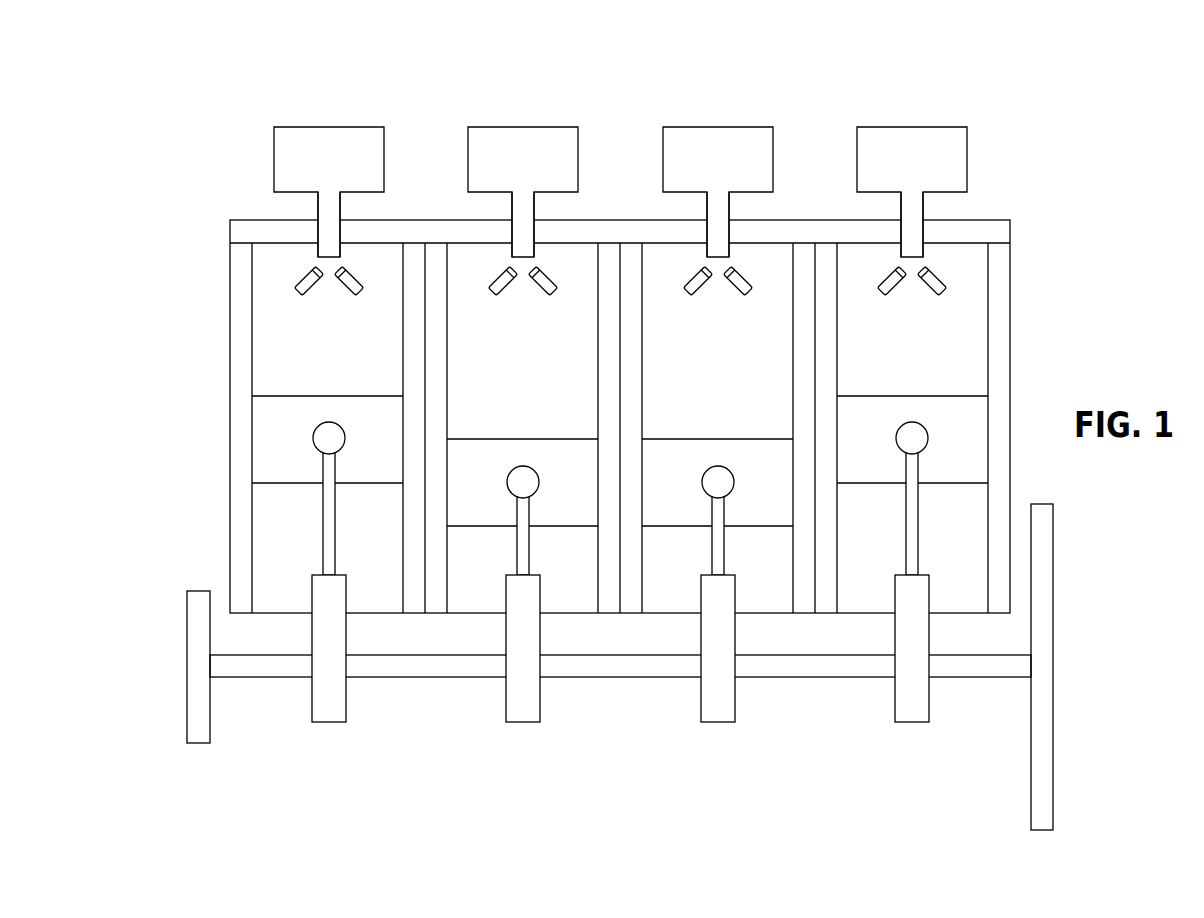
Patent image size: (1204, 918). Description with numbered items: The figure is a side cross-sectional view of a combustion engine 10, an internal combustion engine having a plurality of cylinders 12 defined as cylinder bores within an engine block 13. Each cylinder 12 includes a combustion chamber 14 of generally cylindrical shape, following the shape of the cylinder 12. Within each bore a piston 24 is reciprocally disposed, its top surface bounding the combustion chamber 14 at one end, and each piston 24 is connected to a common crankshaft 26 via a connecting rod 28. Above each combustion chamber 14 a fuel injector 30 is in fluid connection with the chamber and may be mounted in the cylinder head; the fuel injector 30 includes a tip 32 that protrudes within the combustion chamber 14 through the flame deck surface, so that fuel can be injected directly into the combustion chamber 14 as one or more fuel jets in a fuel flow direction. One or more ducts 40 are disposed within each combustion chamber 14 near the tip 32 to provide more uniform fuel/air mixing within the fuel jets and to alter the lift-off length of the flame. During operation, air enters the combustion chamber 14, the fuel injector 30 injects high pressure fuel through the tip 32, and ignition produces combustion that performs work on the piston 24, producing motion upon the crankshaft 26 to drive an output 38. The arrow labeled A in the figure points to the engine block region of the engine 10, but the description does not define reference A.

The combustion engine 10 is at (1019, 133).
The cylinder 12 is at (278, 320).
The engine block 13 is at (992, 222).
The combustion chamber 14 is at (306, 352).
The piston 24 is at (284, 469).
The crankshaft 26 is at (494, 688).
The connecting rod 28 is at (346, 576).
The fuel injector 30 is at (318, 127).
The tip 32 is at (341, 259).
The output 38 is at (1053, 655).
The duct 40 is at (318, 268).
The direction A is at (219, 483).